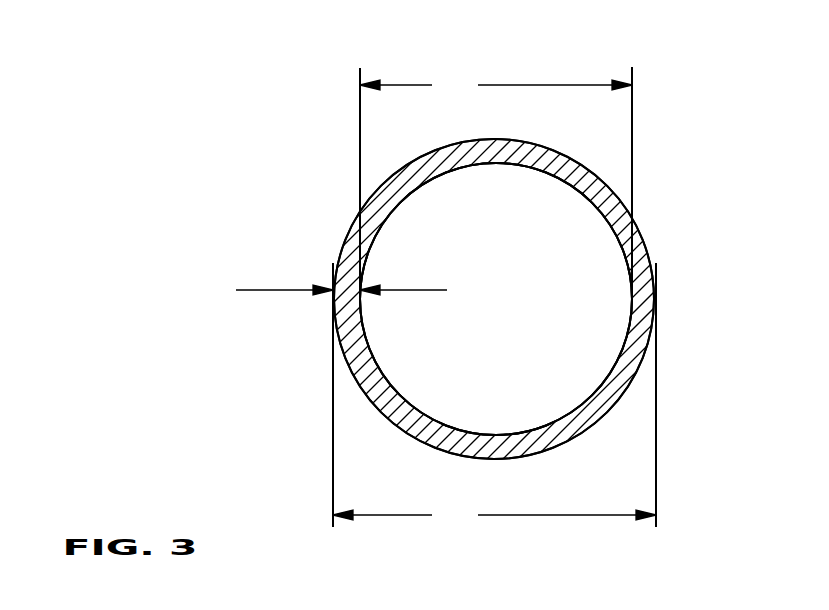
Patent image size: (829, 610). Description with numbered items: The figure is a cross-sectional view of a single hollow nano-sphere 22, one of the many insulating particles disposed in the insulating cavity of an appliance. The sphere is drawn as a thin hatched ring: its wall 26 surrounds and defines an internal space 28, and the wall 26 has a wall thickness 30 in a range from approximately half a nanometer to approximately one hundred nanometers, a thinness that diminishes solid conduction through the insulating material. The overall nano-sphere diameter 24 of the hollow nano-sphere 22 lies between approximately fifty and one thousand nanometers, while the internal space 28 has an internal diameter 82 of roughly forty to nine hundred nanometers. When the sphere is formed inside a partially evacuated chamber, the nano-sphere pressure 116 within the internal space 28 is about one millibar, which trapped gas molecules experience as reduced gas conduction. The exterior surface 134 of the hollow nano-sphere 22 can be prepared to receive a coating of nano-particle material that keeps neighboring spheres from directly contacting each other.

The hollow nano-sphere 22 is at (666, 192).
The nano-sphere diameter 24 is at (494, 395).
The wall 26 is at (648, 245).
The internal space 28 is at (586, 365).
The wall thickness 30 is at (287, 288).
The internal diameter 82 is at (496, 183).
The nano-sphere pressure 116 is at (535, 228).
The exterior surface 134 is at (367, 412).